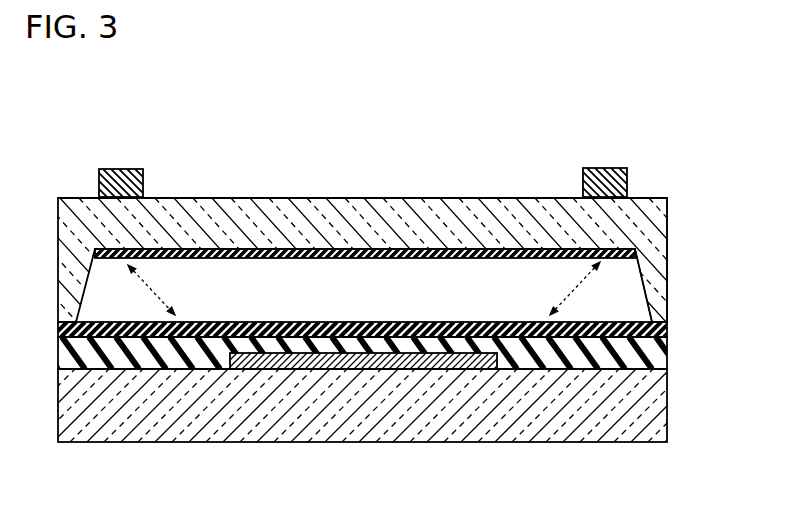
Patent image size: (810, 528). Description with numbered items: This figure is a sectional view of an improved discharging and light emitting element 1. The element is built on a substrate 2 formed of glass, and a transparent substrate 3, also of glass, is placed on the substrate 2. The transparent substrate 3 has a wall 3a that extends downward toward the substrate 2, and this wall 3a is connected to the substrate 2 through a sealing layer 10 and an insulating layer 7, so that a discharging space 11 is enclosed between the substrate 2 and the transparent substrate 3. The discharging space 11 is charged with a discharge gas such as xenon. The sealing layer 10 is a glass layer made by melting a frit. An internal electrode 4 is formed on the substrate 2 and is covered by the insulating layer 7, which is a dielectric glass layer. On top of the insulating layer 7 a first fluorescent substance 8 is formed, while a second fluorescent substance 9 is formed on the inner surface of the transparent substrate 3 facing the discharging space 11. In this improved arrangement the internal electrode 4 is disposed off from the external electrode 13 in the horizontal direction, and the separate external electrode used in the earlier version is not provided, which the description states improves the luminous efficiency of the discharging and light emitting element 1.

The discharging and light emitting element 1 is at (37, 152).
The substrate 2 is at (90, 408).
The transparent substrate 3 is at (72, 223).
The wall 3a is at (665, 268).
The internal electrode 4 is at (300, 354).
The insulating layer 7 is at (67, 357).
The first fluorescent substance 8 is at (517, 333).
The second fluorescent substance 9 is at (518, 257).
The sealing layer 10 is at (72, 333).
The discharging space 11 is at (628, 292).
The external electrode 13 is at (100, 184).